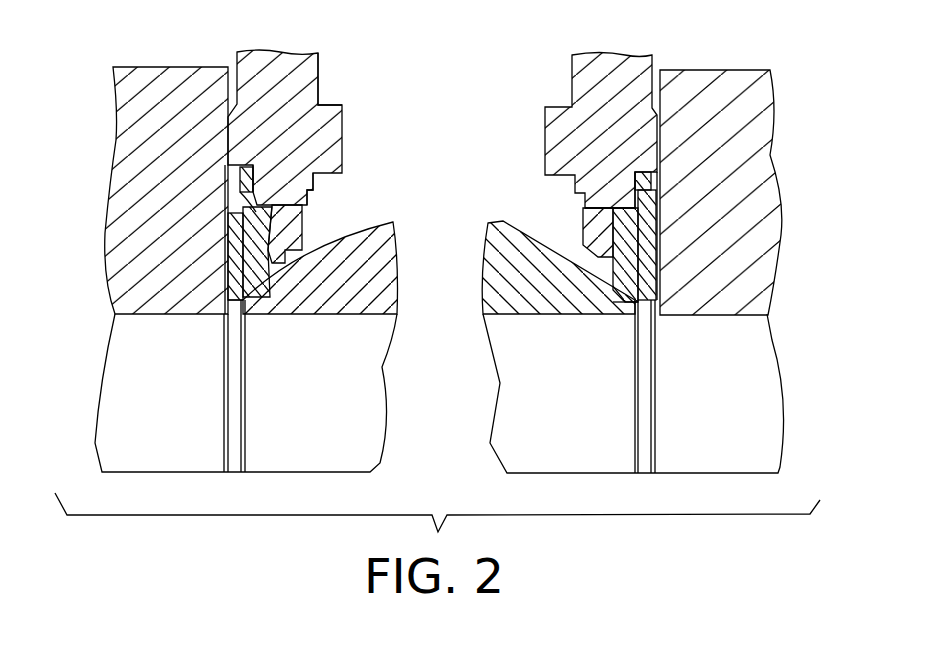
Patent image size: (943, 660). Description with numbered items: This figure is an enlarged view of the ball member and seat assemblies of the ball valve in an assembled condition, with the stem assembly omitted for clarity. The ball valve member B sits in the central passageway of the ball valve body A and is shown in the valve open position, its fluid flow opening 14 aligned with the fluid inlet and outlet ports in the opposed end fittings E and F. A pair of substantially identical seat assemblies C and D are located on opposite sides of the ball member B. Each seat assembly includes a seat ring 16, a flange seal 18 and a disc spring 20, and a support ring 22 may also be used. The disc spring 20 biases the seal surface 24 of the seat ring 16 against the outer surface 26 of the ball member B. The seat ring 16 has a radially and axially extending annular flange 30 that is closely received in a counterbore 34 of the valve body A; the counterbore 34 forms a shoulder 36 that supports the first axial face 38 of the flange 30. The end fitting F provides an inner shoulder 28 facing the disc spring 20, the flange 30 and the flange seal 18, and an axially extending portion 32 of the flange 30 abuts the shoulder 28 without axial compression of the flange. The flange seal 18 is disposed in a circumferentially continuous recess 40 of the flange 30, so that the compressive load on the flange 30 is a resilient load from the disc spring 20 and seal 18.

The fluid flow opening 14 is at (439, 393).
The seat ring 16 is at (230, 262).
The flange seal 18 is at (234, 173).
The disc spring 20 is at (250, 267).
The support ring 22 is at (293, 222).
The seal surface 24 is at (249, 302).
The outer surface 26 is at (543, 228).
The inner shoulder 28 is at (652, 285).
The annular flange 30 is at (247, 190).
The axially extending portion 32 is at (227, 200).
The counterbore 34 is at (277, 130).
The shoulder 36 is at (290, 188).
The first axial face 38 is at (255, 168).
The notch or recess 40 is at (650, 178).
The ball valve body A is at (323, 58).
The ball valve member B is at (520, 318).
The seat assembly C is at (570, 62).
The seat assembly D is at (213, 327).
The end fitting E is at (158, 148).
The end fitting F is at (712, 130).